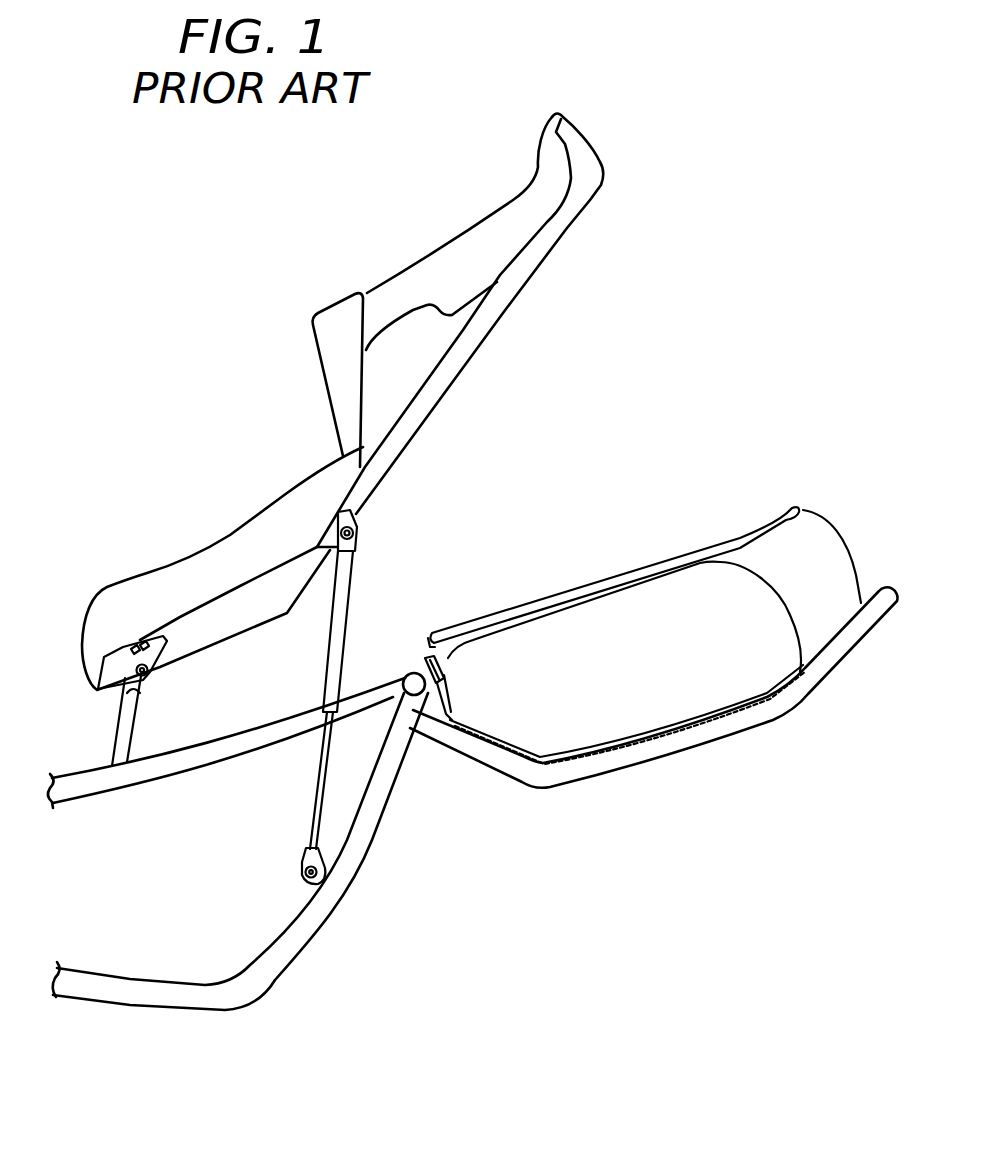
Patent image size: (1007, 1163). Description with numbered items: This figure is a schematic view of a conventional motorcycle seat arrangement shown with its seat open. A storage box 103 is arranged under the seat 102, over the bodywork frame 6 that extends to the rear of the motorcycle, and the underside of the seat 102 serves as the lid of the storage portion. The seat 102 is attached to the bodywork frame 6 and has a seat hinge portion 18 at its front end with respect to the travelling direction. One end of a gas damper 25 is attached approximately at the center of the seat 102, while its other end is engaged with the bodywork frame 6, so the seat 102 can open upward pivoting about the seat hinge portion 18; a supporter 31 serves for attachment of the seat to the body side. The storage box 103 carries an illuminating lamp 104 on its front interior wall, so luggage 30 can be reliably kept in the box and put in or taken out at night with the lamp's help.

The bodywork frame 6 is at (70, 784).
The seat hinge portion 18 is at (133, 650).
The gas damper 25 is at (338, 623).
The luggage 30 is at (713, 680).
The supporter 31 is at (127, 727).
The seat 102 is at (215, 543).
The storage box 103 is at (823, 522).
The illuminating lamp 104 is at (438, 682).